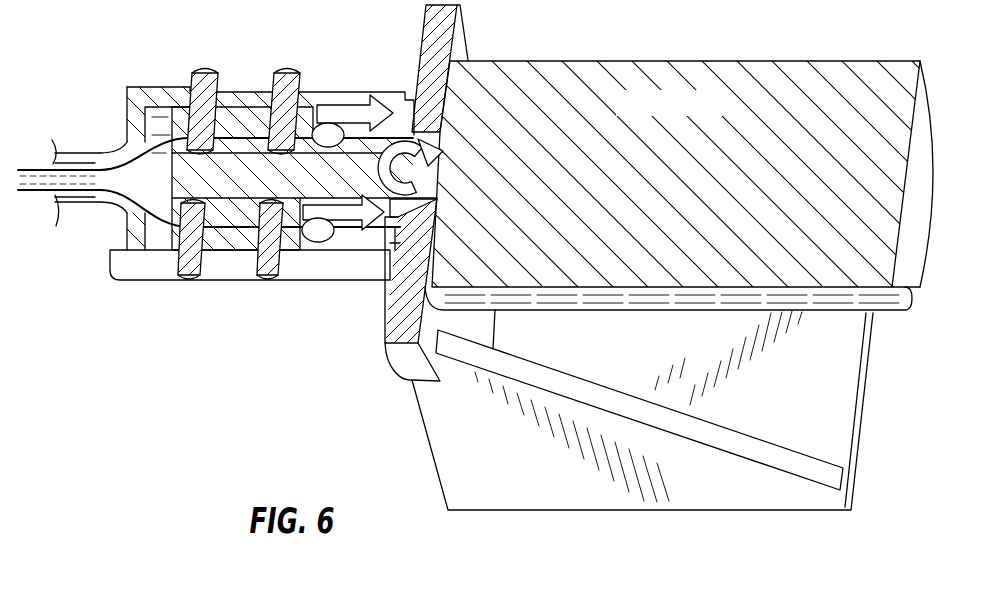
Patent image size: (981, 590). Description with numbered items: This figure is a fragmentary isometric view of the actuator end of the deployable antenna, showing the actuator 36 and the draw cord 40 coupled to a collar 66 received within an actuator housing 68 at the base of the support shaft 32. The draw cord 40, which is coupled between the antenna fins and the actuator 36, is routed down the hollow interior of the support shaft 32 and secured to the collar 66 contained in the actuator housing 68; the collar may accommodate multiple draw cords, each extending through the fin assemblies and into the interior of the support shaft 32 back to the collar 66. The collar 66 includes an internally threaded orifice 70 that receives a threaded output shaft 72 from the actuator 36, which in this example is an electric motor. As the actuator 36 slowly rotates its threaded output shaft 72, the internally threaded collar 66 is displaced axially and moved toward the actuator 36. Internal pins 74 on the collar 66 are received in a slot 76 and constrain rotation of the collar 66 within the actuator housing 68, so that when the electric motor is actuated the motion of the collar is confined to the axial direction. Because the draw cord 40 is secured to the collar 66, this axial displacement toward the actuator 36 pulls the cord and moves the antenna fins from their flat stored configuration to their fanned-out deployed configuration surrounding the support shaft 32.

The support shaft 32 is at (65, 212).
The actuator 36 is at (583, 62).
The draw cord 40 is at (22, 190).
The collar 66 is at (248, 123).
The actuator housing 68 is at (346, 90).
The internally threaded orifice 70 is at (233, 185).
The threaded output shaft 72 is at (325, 187).
The internal pins 74 is at (180, 268).
The slot 76 is at (193, 74).